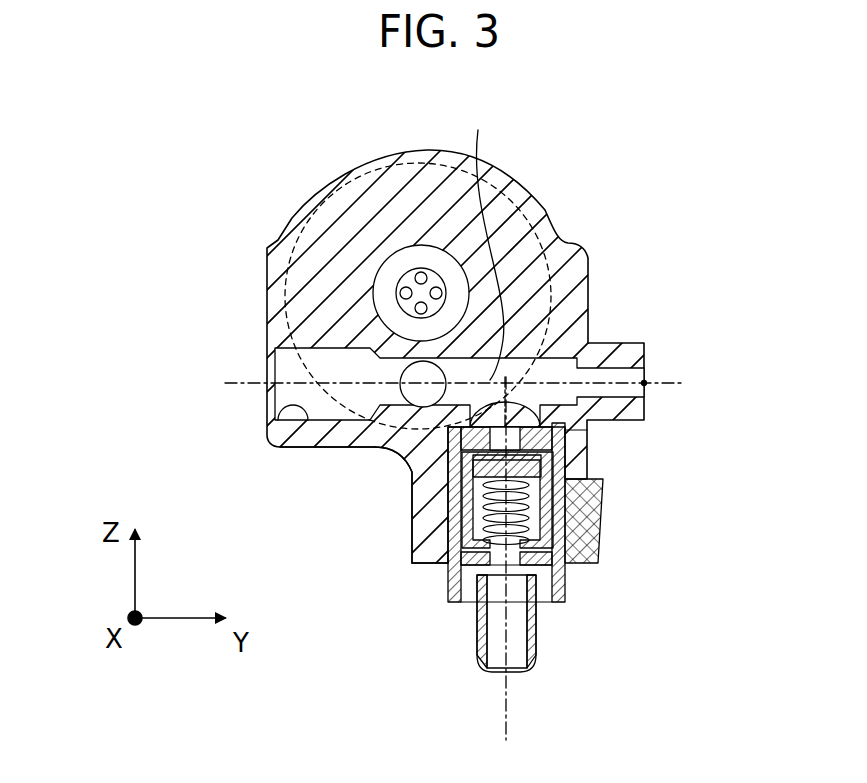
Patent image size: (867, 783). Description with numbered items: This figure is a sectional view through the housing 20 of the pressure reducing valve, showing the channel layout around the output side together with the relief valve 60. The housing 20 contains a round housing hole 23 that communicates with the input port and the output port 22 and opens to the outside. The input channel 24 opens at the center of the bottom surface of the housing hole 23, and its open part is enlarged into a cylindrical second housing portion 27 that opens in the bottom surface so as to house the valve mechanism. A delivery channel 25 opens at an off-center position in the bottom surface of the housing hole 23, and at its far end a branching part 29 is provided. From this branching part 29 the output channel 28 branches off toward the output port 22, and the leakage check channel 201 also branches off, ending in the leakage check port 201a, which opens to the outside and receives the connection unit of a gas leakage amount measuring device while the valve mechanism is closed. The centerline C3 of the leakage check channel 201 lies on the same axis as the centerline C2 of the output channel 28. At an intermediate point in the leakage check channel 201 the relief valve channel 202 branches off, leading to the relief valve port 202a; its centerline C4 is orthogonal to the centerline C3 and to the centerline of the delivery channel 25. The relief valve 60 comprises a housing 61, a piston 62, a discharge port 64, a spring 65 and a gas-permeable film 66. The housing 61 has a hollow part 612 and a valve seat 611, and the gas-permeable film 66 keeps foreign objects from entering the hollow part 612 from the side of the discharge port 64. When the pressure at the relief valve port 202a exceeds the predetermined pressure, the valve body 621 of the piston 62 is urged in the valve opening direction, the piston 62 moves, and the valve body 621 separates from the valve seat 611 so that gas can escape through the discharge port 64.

The housing 20 is at (520, 186).
The leakage check channel 201 is at (483, 238).
The leakage check port 201a is at (646, 383).
The relief valve channel 202 is at (535, 413).
The relief valve port 202a is at (545, 370).
The output port 22 is at (266, 385).
The housing hole 23 is at (577, 232).
The input channel 24 is at (397, 297).
The delivery channel 25 is at (350, 447).
The second housing portion 27 is at (377, 268).
The output channel 28 is at (290, 405).
The branching part 29 is at (385, 448).
The relief valve 60 is at (554, 561).
The housing 61 is at (565, 468).
The valve seat 611 is at (410, 503).
The hollow part 612 is at (440, 563).
The piston 62 is at (574, 498).
The valve body 621 is at (585, 437).
The discharge port 64 is at (500, 672).
The spring 65 is at (542, 520).
The gas-permeable film 66 is at (558, 568).
The centerline of the output channel C2 is at (233, 384).
The centerline of the leakage check channel C3 is at (676, 385).
The centerline of the relief valve channel C4 is at (510, 703).